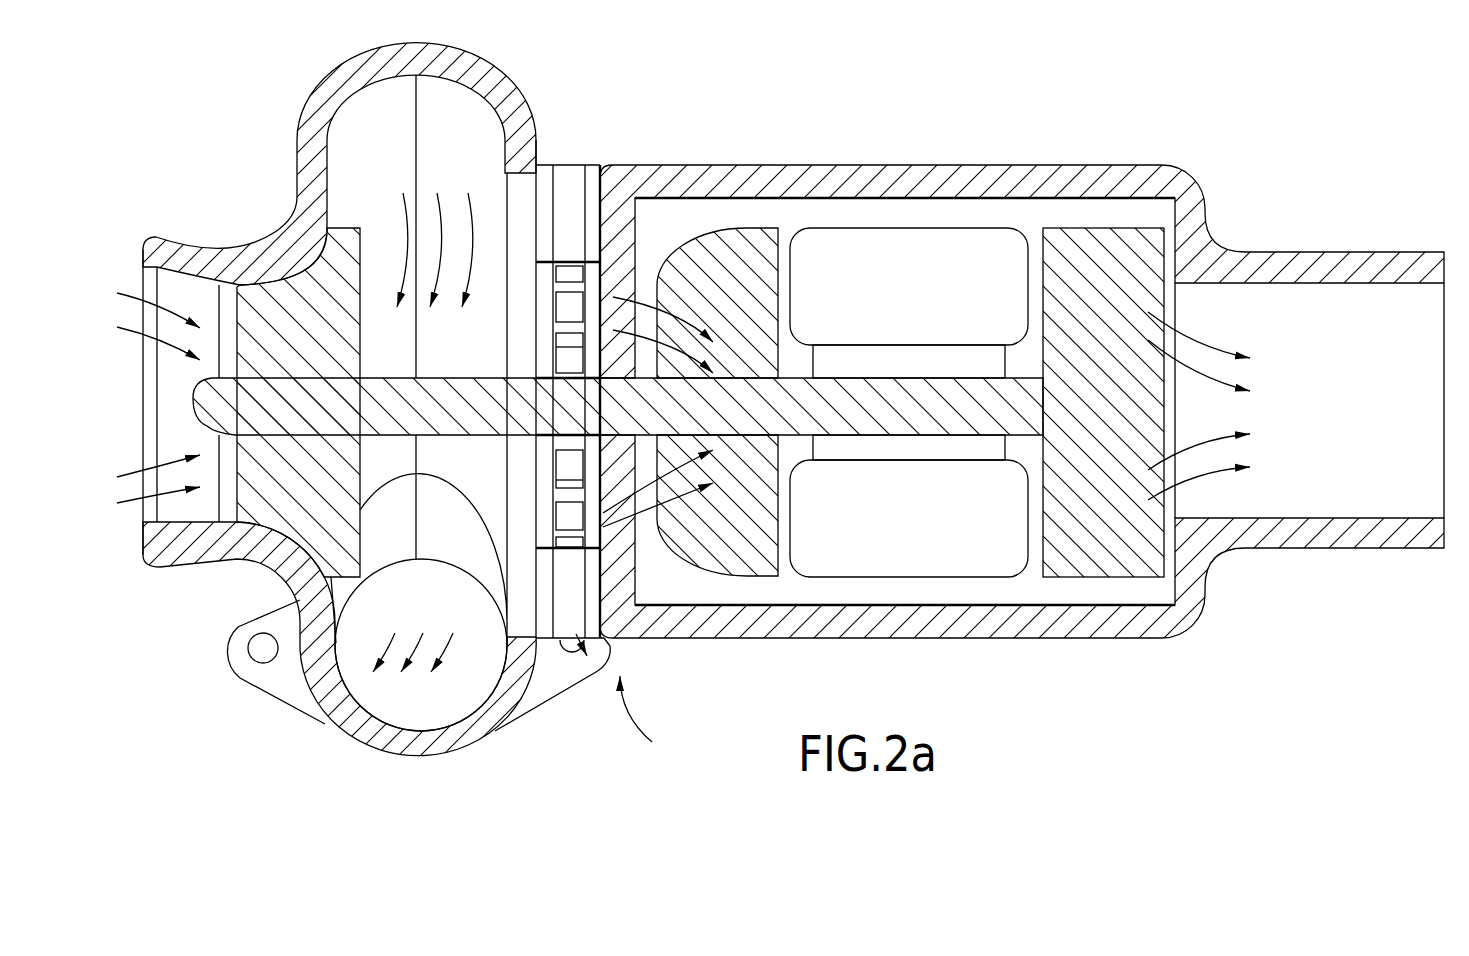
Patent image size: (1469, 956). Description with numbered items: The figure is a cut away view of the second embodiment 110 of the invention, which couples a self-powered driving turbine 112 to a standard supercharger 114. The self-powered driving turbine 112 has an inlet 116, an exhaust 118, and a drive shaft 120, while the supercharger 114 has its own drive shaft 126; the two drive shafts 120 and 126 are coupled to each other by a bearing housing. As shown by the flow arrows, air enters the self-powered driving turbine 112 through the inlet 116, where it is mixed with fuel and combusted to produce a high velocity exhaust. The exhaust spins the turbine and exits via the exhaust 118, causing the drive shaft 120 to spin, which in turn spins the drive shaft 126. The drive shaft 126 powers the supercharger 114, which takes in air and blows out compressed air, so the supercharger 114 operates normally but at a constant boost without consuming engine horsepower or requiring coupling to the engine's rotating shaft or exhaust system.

The second embodiment 110 is at (1159, 50).
The self-powered driving turbine 112 is at (743, 414).
The supercharger 114 is at (313, 408).
The inlet 116 is at (568, 270).
The exhaust 118 is at (1360, 400).
The drive shaft 120 is at (921, 418).
The drive shaft 126 is at (489, 418).